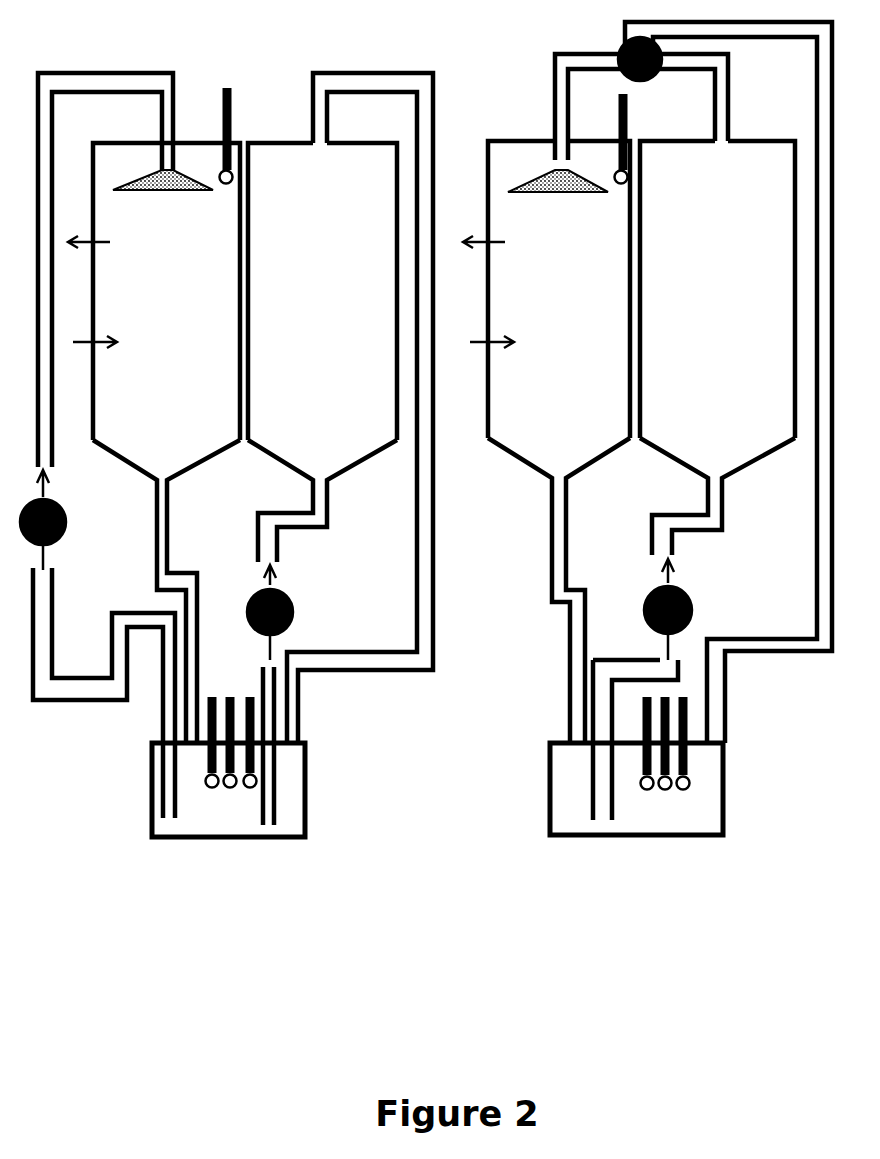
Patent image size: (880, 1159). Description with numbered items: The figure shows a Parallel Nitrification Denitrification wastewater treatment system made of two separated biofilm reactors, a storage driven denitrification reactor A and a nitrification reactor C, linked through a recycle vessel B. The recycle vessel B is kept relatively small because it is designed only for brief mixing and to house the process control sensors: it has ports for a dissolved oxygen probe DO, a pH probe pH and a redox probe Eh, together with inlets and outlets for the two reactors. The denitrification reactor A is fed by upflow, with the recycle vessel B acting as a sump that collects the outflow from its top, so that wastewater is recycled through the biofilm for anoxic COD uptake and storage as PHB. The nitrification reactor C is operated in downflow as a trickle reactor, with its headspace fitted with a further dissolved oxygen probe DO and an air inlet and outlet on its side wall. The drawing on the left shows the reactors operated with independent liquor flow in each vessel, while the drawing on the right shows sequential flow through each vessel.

The storage driven denitrification reactor A is at (521, 351).
The recycle vessel B is at (437, 790).
The nitrification reactor C is at (361, 442).
The dissolved oxygen probe DO is at (430, 443).
The pH probe pH is at (448, 744).
The redox probe Eh is at (467, 744).